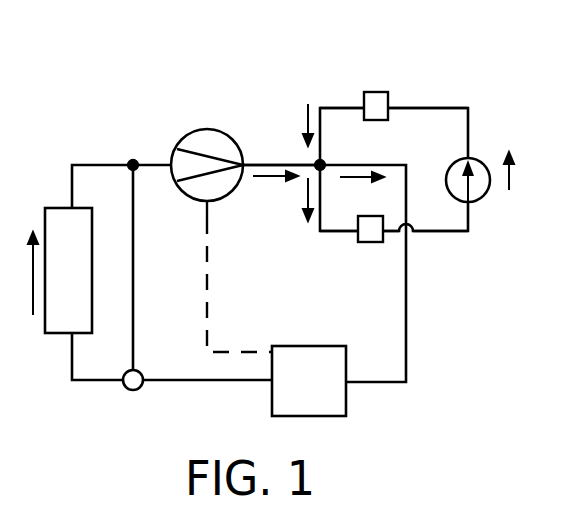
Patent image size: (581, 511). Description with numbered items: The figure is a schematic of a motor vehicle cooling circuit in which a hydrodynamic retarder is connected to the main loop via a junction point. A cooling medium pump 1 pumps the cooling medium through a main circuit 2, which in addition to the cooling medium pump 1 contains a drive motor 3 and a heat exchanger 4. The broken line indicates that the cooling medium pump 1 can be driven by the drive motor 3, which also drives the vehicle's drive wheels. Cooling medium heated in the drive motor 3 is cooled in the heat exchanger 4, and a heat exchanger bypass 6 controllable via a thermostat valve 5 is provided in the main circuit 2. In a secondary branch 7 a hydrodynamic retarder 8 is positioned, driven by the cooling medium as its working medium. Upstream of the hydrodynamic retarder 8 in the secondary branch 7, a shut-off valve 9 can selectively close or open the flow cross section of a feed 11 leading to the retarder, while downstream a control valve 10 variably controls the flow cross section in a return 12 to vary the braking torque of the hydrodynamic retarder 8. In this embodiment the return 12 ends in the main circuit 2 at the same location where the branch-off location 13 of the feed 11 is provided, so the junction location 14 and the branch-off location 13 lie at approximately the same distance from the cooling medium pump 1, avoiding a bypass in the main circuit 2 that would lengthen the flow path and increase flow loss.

The cooling medium pump 1 is at (212, 140).
The main circuit 2 is at (453, 322).
The drive motor 3 is at (337, 404).
The heat exchanger 4 is at (61, 220).
The thermostat valve 5 is at (135, 390).
The heat exchanger bypass 6 is at (130, 195).
The secondary branch 7 is at (479, 74).
The hydrodynamic retarder 8 is at (483, 158).
The shut-off valve 9 is at (373, 243).
The control valve 10 is at (378, 108).
The feed 11 is at (457, 232).
The return 12 is at (415, 108).
The branch-off location 13 is at (320, 165).
The junction location 14 is at (319, 164).